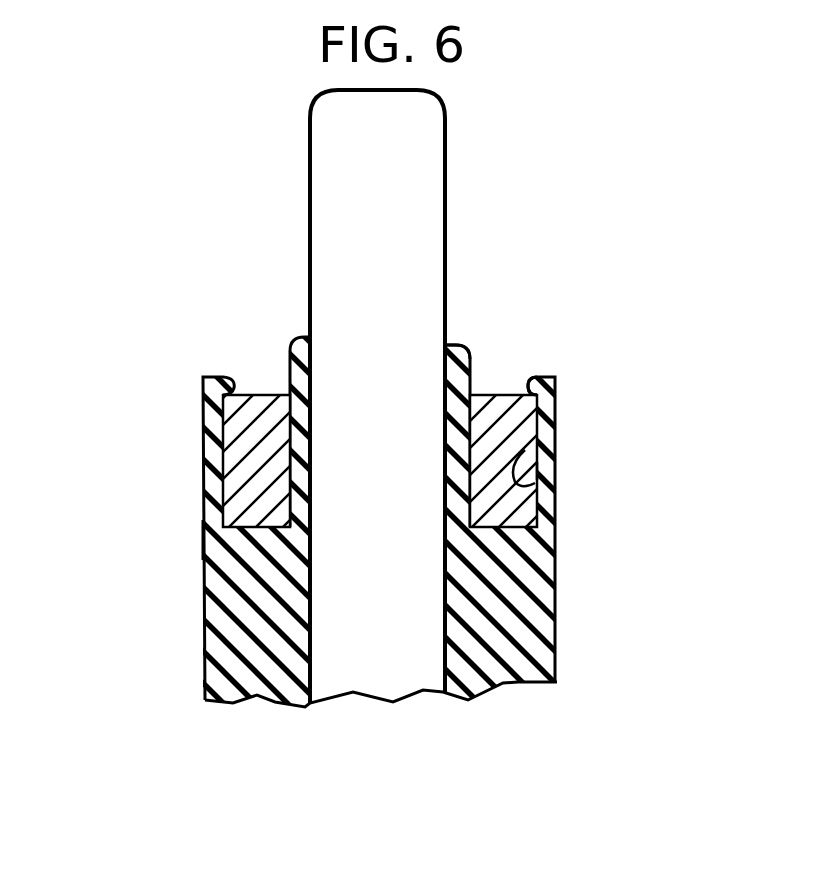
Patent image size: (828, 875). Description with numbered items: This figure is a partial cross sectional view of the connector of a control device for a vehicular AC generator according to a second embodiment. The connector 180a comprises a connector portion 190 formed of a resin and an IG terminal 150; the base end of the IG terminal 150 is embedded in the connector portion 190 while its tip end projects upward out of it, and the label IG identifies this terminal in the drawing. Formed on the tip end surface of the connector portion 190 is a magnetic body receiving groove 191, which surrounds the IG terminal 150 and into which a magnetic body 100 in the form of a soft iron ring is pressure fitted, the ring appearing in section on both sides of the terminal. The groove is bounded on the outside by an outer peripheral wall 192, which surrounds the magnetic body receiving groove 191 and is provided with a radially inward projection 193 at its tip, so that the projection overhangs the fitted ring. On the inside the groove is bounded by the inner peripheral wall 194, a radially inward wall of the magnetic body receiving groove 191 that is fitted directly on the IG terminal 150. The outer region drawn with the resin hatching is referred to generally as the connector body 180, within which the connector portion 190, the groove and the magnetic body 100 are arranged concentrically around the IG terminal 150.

The magnetic body 100 is at (548, 414).
The IG terminal 150 is at (413, 214).
The insulating gap IG is at (425, 169).
The housing 180 is at (565, 638).
The connector 180a is at (180, 542).
The connector portion 190 is at (540, 580).
The magnetic body receiving groove 191 is at (525, 450).
The outer peripheral wall 192 is at (543, 470).
The radially inward projection 193 is at (541, 382).
The inner peripheral wall 194 is at (448, 352).